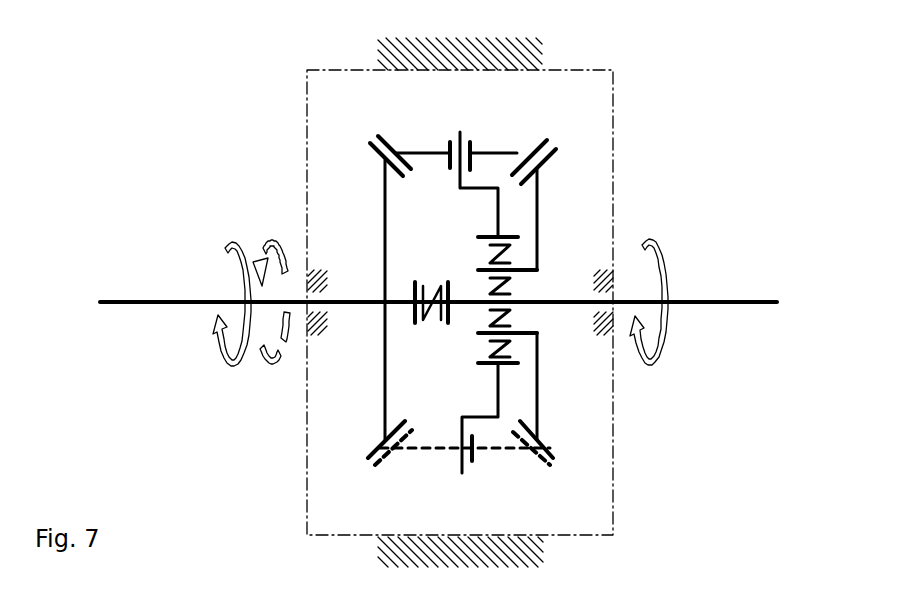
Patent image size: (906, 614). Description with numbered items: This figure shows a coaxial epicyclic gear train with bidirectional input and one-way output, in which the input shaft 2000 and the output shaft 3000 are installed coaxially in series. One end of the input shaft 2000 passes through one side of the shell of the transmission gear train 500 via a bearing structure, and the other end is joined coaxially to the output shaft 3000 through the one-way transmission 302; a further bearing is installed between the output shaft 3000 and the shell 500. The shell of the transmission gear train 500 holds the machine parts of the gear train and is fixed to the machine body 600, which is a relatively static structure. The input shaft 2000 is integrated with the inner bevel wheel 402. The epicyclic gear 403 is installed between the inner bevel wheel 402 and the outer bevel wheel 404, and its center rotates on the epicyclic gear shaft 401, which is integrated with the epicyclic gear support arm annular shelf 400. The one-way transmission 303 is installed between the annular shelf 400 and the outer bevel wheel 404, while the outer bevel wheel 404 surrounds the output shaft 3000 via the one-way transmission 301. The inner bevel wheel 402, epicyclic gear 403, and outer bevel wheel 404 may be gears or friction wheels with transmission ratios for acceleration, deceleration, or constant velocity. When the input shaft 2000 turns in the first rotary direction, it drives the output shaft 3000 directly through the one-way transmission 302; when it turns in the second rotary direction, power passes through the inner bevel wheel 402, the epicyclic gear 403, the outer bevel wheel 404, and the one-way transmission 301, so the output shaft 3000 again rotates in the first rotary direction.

The machine body 600 is at (455, 62).
The shell of the transmission gear train 500 is at (307, 140).
The epicyclic gear 403 is at (388, 148).
The inner bevel wheel 402 is at (383, 152).
The epicyclic gear shaft 401 is at (462, 135).
The outer bevel wheel 404 is at (548, 165).
The one-way transmission 303 is at (486, 248).
The one-way transmission 301 is at (517, 313).
The one-way transmission 302 is at (432, 320).
The epicyclic gear support arm annular shelf 400 is at (498, 392).
The input shaft 2000 is at (170, 300).
The output shaft 3000 is at (702, 300).